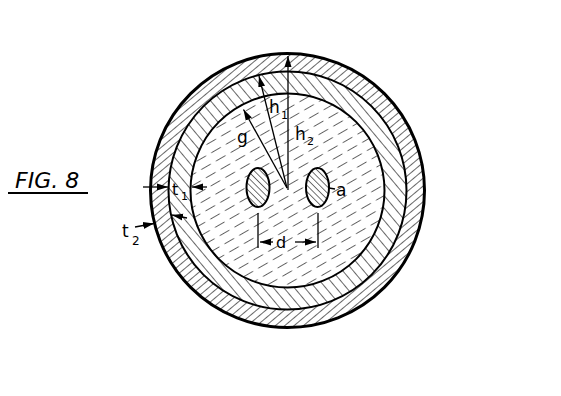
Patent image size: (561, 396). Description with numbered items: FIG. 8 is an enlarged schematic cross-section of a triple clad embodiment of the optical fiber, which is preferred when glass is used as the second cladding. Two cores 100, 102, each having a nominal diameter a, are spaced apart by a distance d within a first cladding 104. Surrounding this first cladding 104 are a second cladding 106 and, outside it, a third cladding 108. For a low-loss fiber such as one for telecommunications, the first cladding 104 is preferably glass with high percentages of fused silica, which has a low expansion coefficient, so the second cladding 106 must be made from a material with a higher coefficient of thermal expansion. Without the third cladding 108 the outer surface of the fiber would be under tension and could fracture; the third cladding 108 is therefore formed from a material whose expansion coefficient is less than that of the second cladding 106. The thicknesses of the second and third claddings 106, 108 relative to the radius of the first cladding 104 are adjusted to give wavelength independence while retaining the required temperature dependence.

The core 100 is at (249, 180).
The core 102 is at (327, 203).
The cladding 104 is at (345, 121).
The second cladding 106 is at (373, 125).
The third cladding 108 is at (405, 138).